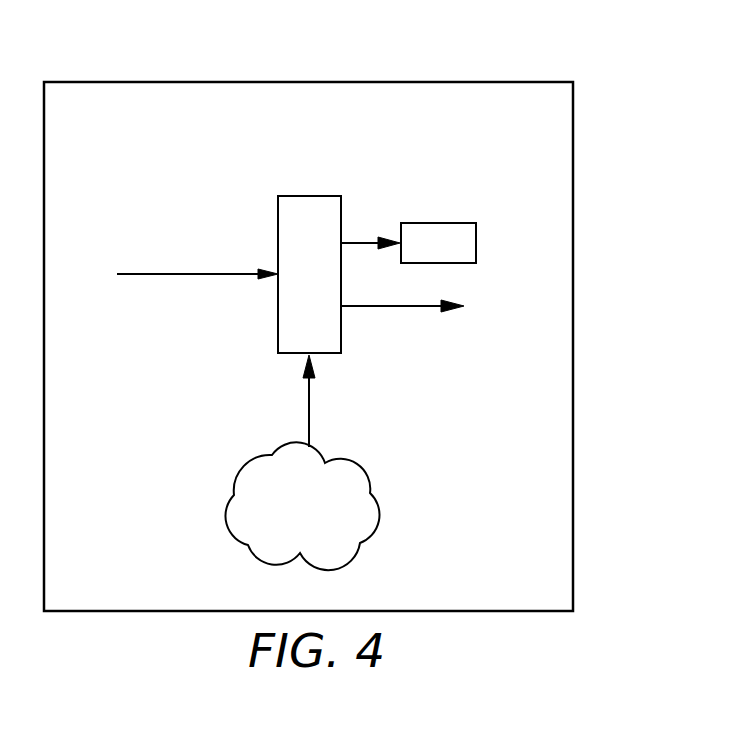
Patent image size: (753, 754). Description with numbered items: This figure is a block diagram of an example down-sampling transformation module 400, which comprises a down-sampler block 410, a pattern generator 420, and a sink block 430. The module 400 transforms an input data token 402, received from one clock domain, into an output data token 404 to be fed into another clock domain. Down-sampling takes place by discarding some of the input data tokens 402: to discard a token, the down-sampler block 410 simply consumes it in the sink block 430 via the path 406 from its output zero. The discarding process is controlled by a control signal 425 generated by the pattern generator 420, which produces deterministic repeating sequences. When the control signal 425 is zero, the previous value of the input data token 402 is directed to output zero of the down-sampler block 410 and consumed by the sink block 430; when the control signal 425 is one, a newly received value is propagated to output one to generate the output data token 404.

The down-sampling transformation module 400 is at (583, 60).
The input data token 402 is at (143, 273).
The output data token 404 is at (428, 305).
The discarded data path to sink 406 is at (368, 241).
The down-sampler block 410 is at (341, 343).
The pattern generator 420 is at (358, 455).
The control signal 425 is at (307, 400).
The sink block 430 is at (457, 222).